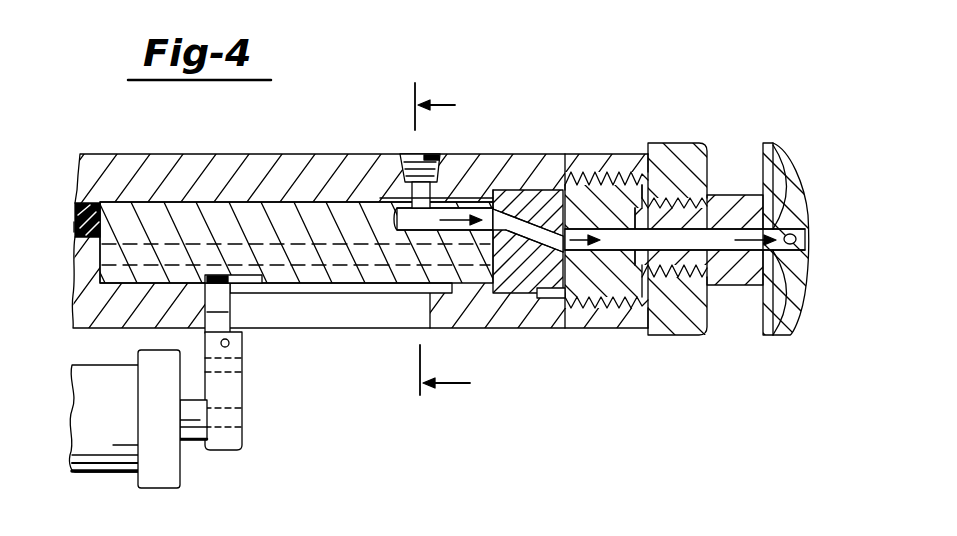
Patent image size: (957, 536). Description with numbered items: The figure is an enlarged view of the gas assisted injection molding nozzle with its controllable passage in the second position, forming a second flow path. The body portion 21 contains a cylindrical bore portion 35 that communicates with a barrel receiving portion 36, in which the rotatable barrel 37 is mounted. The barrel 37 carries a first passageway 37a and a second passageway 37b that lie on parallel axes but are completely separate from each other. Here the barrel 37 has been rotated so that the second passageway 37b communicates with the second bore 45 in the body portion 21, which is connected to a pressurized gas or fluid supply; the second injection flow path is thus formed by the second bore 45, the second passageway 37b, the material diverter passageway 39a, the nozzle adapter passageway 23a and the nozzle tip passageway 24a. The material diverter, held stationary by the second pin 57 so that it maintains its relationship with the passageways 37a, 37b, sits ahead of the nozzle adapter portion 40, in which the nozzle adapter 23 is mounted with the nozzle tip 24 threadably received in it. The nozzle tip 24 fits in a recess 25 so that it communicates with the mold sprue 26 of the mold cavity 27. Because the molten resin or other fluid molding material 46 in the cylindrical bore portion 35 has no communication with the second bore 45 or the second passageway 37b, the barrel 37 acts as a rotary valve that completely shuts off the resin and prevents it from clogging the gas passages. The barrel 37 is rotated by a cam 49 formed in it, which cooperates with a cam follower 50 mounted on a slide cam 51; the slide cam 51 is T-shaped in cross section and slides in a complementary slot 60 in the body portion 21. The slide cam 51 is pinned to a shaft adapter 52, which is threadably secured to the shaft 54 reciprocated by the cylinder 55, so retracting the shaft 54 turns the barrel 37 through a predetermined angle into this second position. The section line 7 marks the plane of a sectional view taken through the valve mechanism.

The section line 7- 7 is at (456, 244).
The body portion 21 is at (210, 155).
The nozzle adapter 23 is at (672, 143).
The nozzle adapter passageway 23a is at (615, 248).
The nozzle tip 24 is at (737, 197).
The nozzle tip passageway 24a is at (686, 249).
The recess 25 is at (790, 325).
The mold sprue 26 is at (792, 241).
The mold cavity 27 is at (772, 193).
The cylindrical bore portion 35 is at (78, 205).
The barrel receiving portion 36 is at (146, 202).
The rotatable barrel 37 is at (368, 255).
The first passageway 37a is at (326, 245).
The second passageway 37b is at (472, 205).
The material diverter passageway 39a is at (512, 244).
The nozzle adapter portion 40 is at (604, 186).
The second bore 45 is at (407, 198).
The fluid molding material 46 is at (75, 226).
The cam 49 is at (250, 286).
The cam follower 50 is at (213, 266).
The slide cam 51 is at (221, 316).
The shaft adapter 52 is at (242, 390).
The shaft 54 is at (190, 442).
The cylinder 55 is at (116, 410).
The second pin 57 is at (545, 298).
The slot 60 is at (422, 290).